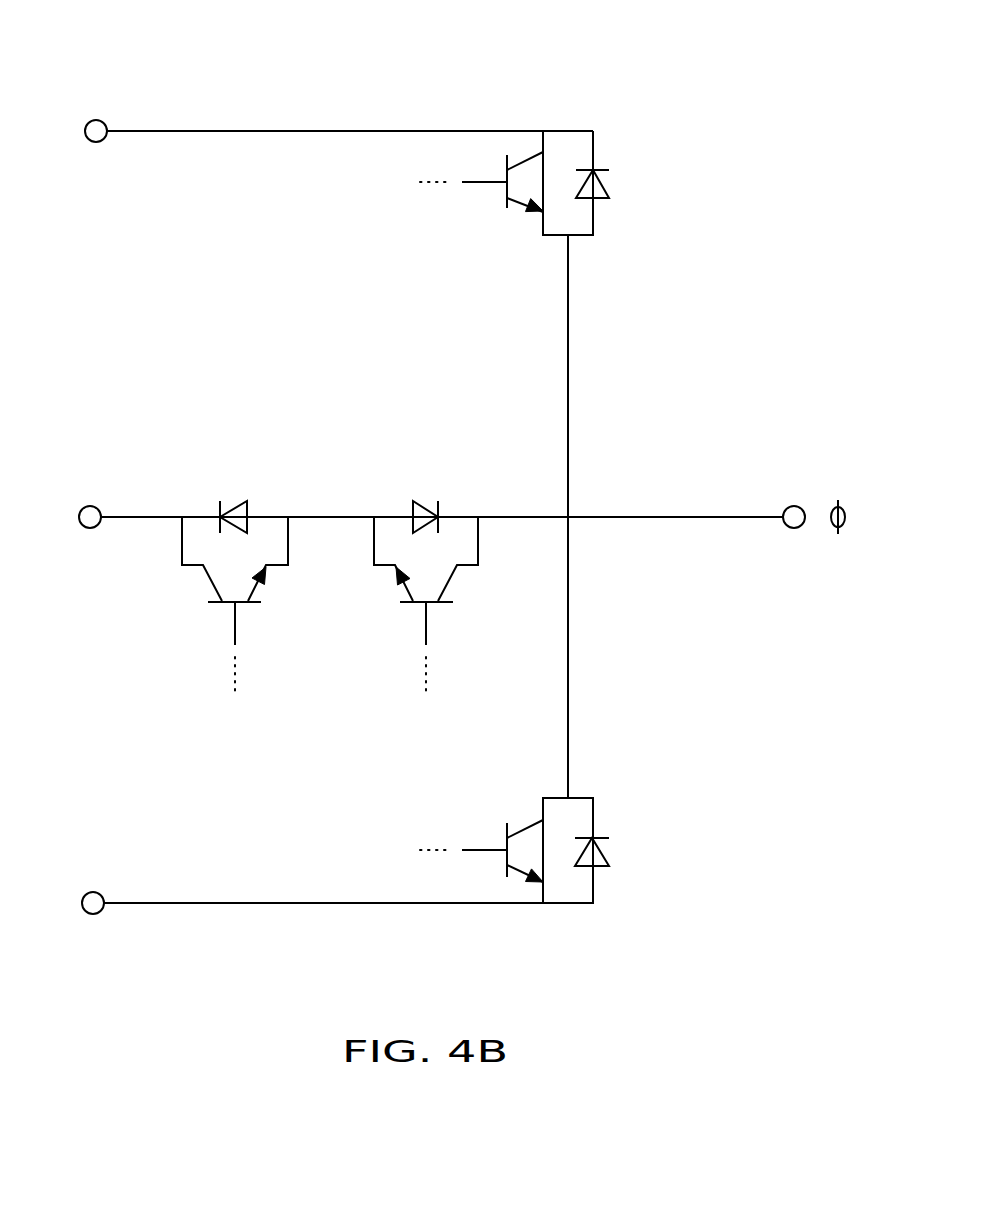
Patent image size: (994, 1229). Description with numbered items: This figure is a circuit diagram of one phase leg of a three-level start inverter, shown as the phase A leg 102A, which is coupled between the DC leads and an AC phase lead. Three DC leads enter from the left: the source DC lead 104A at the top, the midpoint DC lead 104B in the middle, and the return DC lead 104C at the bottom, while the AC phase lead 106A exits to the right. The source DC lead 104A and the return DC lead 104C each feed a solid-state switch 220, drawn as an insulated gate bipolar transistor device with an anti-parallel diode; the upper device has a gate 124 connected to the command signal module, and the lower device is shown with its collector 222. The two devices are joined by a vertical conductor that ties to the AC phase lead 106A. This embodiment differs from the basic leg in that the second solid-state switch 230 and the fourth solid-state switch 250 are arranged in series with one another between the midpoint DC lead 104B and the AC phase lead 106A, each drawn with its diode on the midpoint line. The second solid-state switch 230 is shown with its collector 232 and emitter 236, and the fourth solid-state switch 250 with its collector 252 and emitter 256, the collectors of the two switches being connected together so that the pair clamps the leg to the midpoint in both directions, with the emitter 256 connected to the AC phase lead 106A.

The phase A leg 102A is at (139, 970).
The source DC lead 104A is at (183, 130).
The midpoint DC lead 104B is at (125, 517).
The return DC lead 104C is at (157, 903).
The AC phase lead 106A is at (702, 517).
The second solid-state switch 220 is at (640, 150).
The gate 124 is at (528, 205).
The collector 222 is at (533, 828).
The second solid-state switch 230 is at (258, 472).
The fourth solid-state switch 250 is at (432, 472).
The collector 232 is at (193, 567).
The emitter 236 is at (287, 542).
The collector 252 is at (478, 540).
The emitter 256 is at (400, 578).